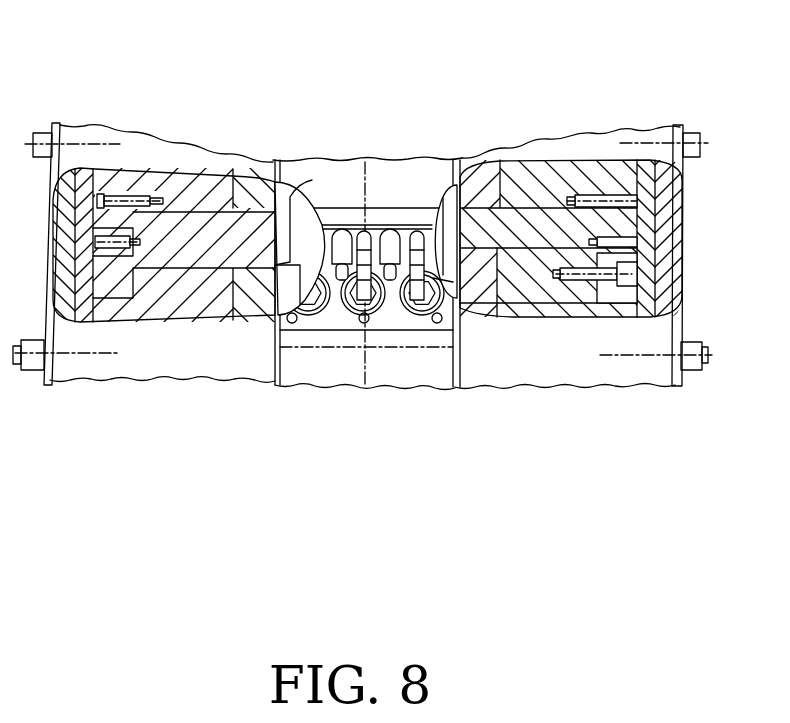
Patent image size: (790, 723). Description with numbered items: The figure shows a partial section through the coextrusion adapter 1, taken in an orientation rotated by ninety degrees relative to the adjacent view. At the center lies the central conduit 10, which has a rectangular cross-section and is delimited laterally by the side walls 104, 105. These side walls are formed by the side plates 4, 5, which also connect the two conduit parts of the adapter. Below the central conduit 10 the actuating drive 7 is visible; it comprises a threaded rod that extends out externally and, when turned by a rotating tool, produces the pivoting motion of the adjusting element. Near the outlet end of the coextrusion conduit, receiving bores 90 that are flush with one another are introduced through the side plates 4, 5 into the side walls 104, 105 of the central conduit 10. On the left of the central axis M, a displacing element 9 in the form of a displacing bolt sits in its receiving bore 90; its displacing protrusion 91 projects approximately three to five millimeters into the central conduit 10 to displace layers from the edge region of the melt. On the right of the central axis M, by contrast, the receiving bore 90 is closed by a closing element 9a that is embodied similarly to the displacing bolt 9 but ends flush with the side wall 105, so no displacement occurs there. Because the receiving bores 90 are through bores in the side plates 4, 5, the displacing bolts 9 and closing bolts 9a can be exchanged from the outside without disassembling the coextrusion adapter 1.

The coextrusion adapter 1 is at (395, 258).
The side plate 4 is at (77, 385).
The side plate 5 is at (593, 386).
The actuating drive 7 is at (391, 308).
The displacing element 9 is at (178, 232).
The closing element 9a is at (540, 227).
The central conduit 10 is at (320, 268).
The receiving bore 90 is at (187, 275).
The displacing protrusion 91 is at (306, 266).
The side wall 104 is at (280, 323).
The side wall 105 is at (449, 235).
The central axis M is at (362, 363).